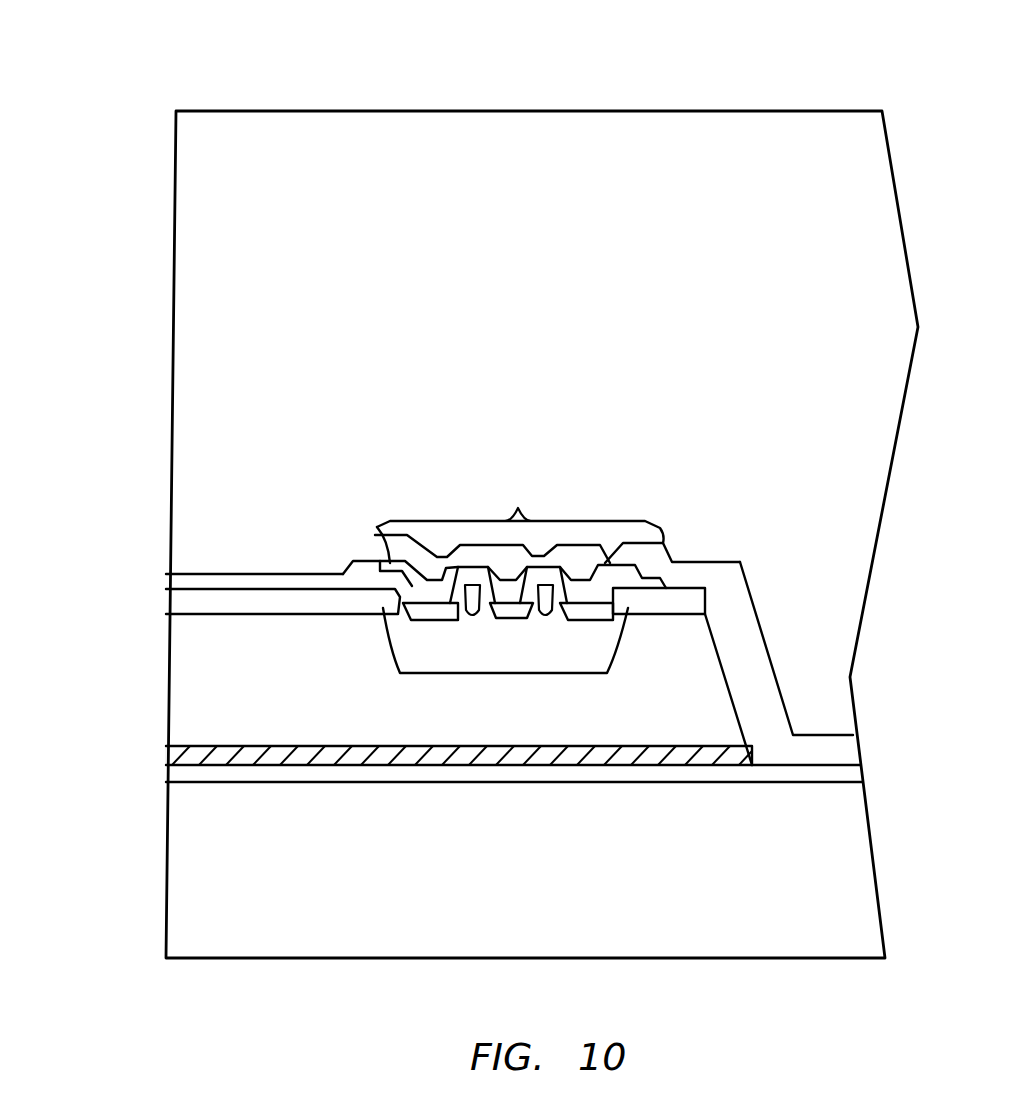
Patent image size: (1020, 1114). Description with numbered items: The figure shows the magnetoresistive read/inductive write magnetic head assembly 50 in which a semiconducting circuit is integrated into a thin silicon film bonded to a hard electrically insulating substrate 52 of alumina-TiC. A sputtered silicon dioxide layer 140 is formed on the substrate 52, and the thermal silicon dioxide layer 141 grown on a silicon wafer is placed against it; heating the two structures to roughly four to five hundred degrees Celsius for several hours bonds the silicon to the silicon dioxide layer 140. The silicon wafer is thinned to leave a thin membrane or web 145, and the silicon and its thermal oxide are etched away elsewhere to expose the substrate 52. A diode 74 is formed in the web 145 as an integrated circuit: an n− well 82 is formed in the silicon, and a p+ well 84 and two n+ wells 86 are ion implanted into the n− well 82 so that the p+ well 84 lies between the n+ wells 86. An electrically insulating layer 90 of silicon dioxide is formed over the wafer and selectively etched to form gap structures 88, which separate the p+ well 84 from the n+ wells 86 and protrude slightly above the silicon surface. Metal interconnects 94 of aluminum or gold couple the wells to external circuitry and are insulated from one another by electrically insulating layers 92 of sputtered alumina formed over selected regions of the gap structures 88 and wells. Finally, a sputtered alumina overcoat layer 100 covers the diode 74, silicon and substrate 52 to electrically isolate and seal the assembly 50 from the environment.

The MR head assembly 50 is at (542, 68).
The substrate 52 is at (548, 884).
The diode 74 is at (517, 501).
The n− well 82 is at (407, 635).
The p+ well 84 is at (512, 622).
The n+ wells 86 is at (426, 622).
The gap structures 88 is at (477, 575).
The electrically insulating layer 90 is at (200, 604).
The electrically insulating layers 92 is at (473, 593).
The metal interconnects 94 is at (377, 527).
The alumina overcoat layer 100 is at (250, 582).
The sputtered silicon dioxide layer 140 is at (183, 773).
The thermal silicon dioxide layer 141 is at (166, 746).
The web 145 is at (700, 712).